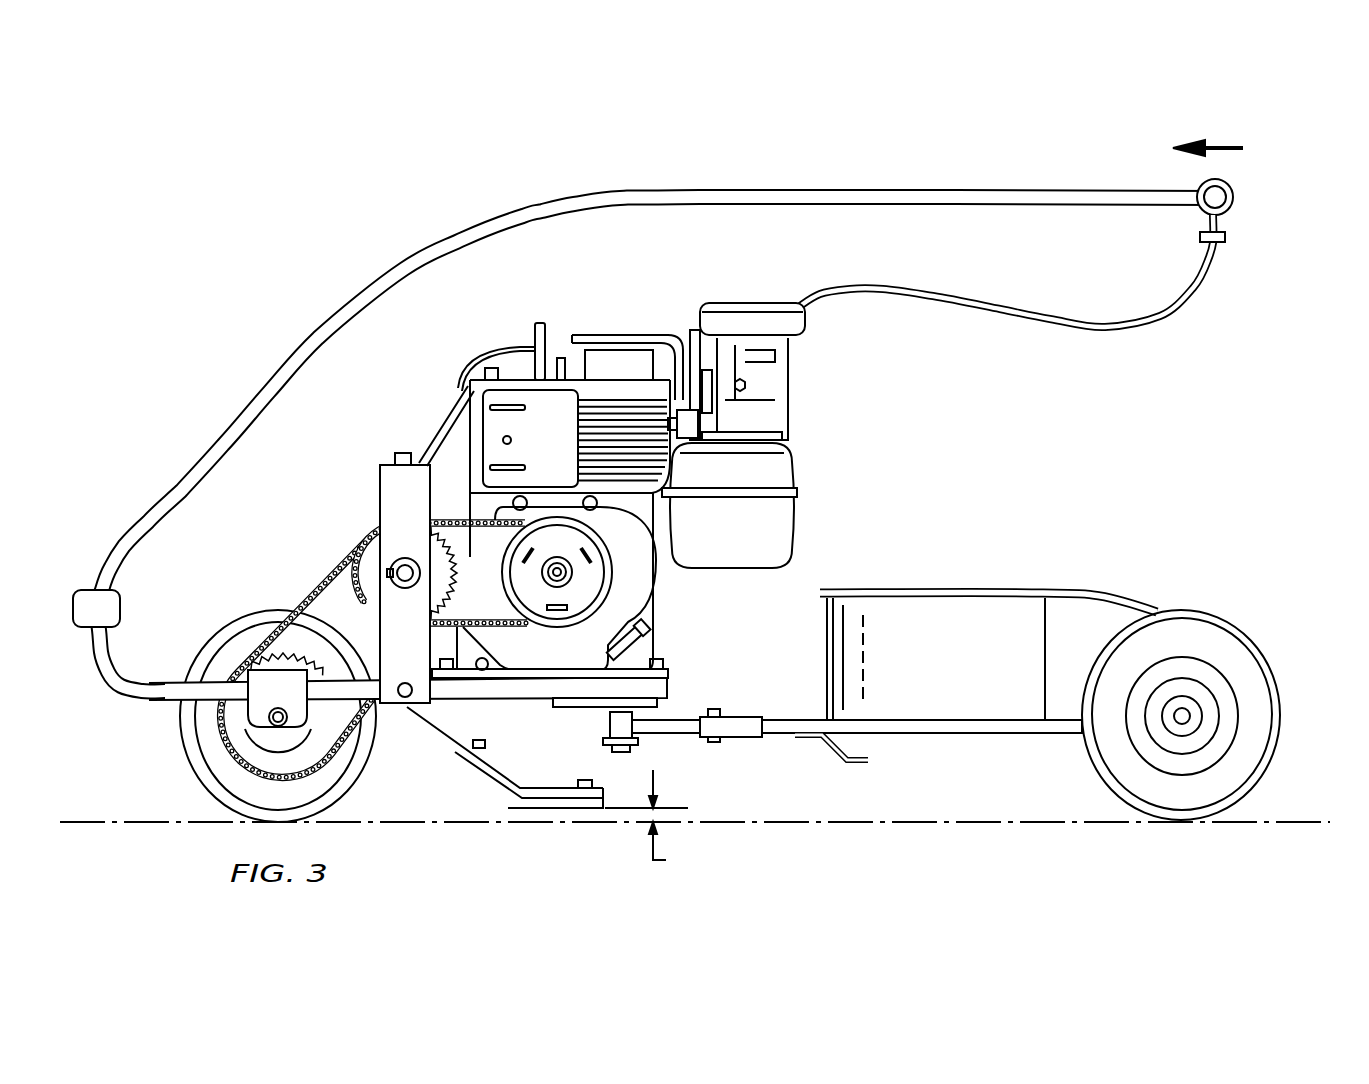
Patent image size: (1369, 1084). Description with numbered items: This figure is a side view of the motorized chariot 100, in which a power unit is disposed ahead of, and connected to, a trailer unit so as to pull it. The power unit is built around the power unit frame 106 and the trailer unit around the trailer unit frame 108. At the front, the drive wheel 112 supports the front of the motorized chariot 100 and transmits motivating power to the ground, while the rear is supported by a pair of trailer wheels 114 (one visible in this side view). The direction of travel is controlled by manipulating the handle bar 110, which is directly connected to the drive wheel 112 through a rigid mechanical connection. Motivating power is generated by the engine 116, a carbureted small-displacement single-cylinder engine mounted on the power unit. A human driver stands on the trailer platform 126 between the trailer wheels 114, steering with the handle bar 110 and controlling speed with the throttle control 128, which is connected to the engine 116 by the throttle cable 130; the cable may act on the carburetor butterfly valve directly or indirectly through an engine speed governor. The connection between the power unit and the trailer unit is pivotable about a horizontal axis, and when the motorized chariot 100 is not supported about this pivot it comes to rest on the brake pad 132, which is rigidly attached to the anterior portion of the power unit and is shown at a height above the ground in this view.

The motorized chariot 100 is at (708, 504).
The power unit frame 106 is at (520, 700).
The trailer unit frame 108 is at (930, 736).
The handle bar 110 is at (862, 188).
The drive wheel 112 is at (178, 741).
The trailer wheels 114 is at (1283, 724).
The engine 116 is at (653, 585).
The trailer platform 126 is at (935, 588).
The throttle control 128 is at (1234, 194).
The throttle cable 130 is at (1106, 335).
The brake pad 132 is at (460, 758).